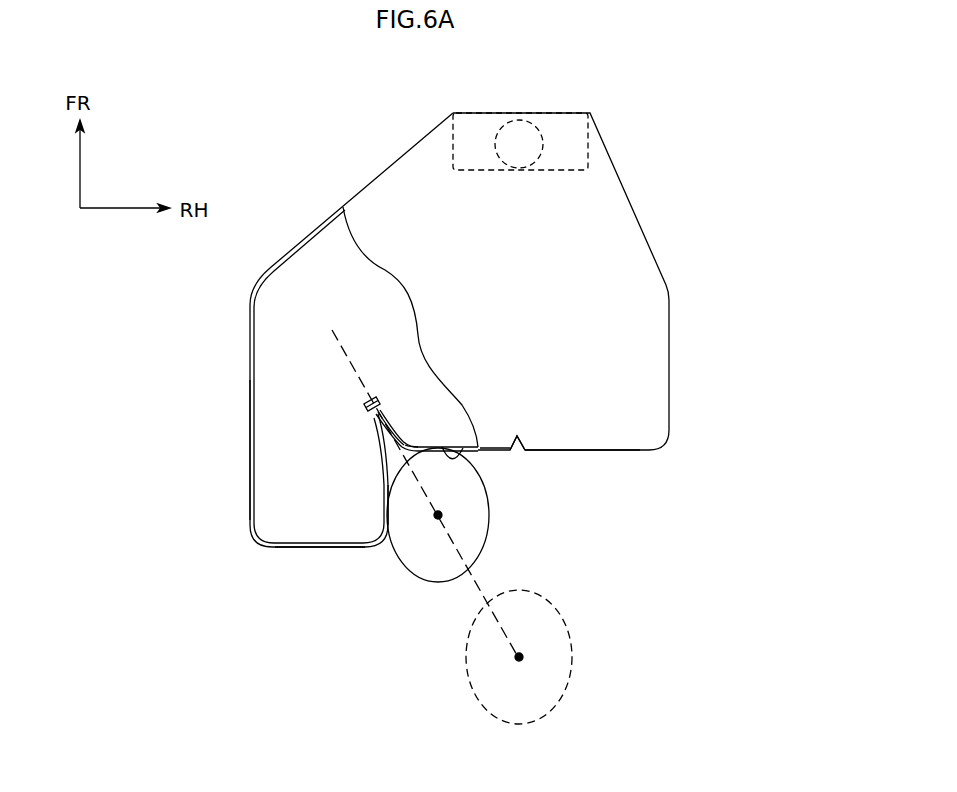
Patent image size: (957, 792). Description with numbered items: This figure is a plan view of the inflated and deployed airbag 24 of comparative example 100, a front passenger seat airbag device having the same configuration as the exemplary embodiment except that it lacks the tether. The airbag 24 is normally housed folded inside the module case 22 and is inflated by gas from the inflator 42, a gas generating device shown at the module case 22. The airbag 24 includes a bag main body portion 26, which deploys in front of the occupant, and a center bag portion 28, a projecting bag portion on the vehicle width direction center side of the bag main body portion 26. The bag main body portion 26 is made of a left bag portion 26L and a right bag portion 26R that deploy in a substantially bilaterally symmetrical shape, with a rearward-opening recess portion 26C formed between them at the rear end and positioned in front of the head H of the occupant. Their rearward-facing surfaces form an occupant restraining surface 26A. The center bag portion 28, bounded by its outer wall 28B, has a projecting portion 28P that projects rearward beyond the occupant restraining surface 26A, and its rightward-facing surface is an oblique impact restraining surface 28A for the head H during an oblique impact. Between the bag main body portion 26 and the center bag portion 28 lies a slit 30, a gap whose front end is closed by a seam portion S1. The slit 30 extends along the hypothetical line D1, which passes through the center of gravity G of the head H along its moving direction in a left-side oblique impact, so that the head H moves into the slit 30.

The comparative example 100 is at (330, 166).
The module case 22 is at (478, 172).
The inflator 42 is at (538, 152).
The airbag 24 is at (655, 230).
The center bag portion 28 is at (249, 352).
The outer wall of side portion 28B is at (248, 468).
The oblique impact restraining surface 28A is at (386, 525).
The projecting portion 28P is at (318, 547).
The seam portion S1 is at (360, 400).
The occupant restraining surface 26A is at (465, 447).
The right bag portion 26R is at (583, 353).
The left bag portion 26L is at (493, 410).
The bag main body portion 26 is at (780, 340).
The recess portion 26C is at (519, 450).
The slit 30 is at (411, 453).
The head H is at (420, 578).
The center of gravity G is at (440, 514).
The hypothetical line D1 is at (463, 602).